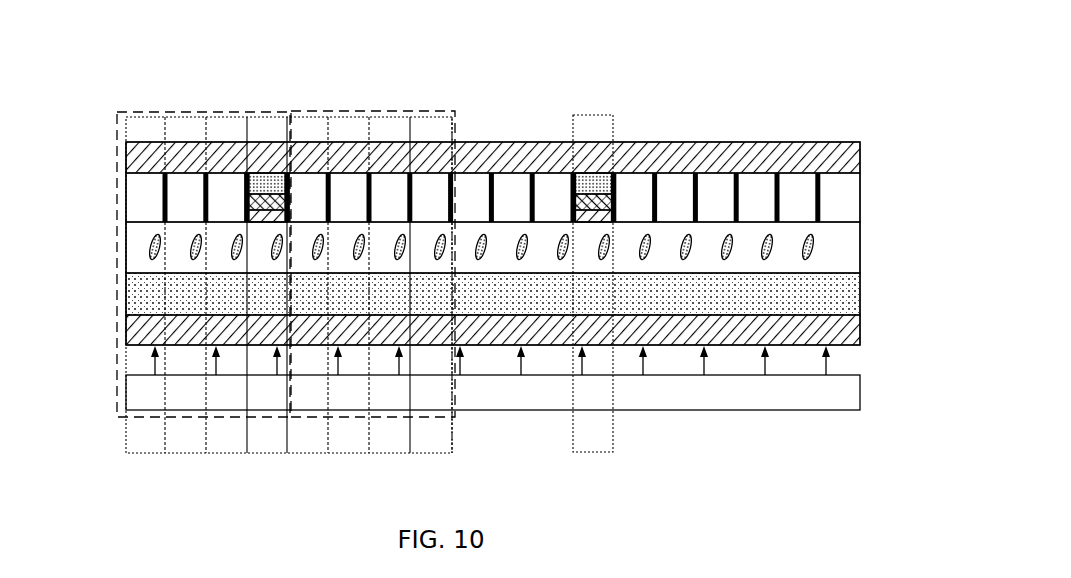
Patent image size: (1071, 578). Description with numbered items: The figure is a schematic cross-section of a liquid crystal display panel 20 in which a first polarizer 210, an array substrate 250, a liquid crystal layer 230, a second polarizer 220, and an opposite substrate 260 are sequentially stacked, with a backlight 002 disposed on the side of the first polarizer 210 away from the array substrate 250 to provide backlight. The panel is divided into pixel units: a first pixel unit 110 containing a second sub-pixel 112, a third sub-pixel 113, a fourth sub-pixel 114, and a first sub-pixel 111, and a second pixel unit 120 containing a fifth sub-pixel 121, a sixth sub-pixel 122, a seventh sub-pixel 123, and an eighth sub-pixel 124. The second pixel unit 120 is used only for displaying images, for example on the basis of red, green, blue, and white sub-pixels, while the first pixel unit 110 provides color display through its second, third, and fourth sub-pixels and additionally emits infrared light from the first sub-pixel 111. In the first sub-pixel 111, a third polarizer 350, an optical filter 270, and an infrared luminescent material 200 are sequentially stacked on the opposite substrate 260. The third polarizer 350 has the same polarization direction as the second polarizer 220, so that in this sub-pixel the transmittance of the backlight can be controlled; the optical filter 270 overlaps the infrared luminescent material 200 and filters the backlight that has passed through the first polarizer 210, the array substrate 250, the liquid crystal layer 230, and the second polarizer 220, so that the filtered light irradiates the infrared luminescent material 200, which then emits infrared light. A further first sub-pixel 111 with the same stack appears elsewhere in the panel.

The display panel 20 is at (922, 31).
The first pixel unit 110 is at (187, 112).
The second pixel unit 120 is at (380, 111).
The first sub-pixel 111 is at (433, 284).
The second sub-pixel 112 is at (147, 285).
The third sub-pixel 113 is at (188, 285).
The fourth sub-pixel 114 is at (229, 285).
The fifth sub-pixel 121 is at (311, 285).
The sixth sub-pixel 122 is at (352, 285).
The seventh sub-pixel 123 is at (393, 285).
The eighth sub-pixel 124 is at (434, 285).
The infrared luminescent material 200 is at (247, 183).
The optical filter 270 is at (247, 203).
The third polarizer 350 is at (321, 231).
The second polarizer 220 is at (828, 161).
The opposite substrate 260 is at (828, 202).
The liquid crystal layer 230 is at (828, 247).
The array substrate 250 is at (828, 294).
The first polarizer 210 is at (828, 328).
The backlight 002 is at (828, 393).